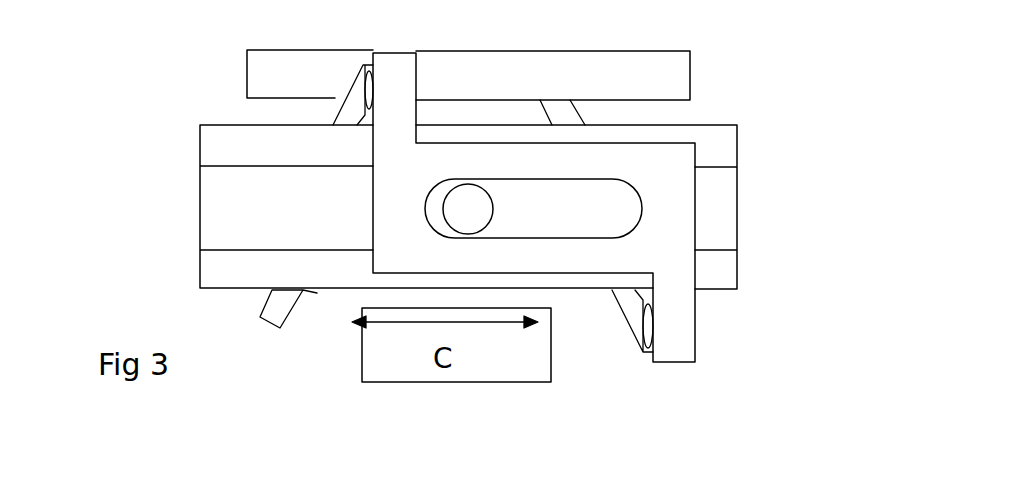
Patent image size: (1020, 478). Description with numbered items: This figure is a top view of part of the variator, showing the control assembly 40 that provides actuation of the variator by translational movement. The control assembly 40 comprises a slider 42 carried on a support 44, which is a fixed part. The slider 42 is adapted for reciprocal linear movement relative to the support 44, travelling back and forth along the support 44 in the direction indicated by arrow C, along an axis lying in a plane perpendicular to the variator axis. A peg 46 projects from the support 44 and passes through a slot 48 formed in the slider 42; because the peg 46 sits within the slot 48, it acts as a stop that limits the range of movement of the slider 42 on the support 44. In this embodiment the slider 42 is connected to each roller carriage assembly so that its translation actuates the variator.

The control assembly 40 is at (178, 131).
The slider 42 is at (695, 217).
The support 44 is at (200, 221).
The peg 46 is at (492, 218).
The slot 48 is at (543, 183).